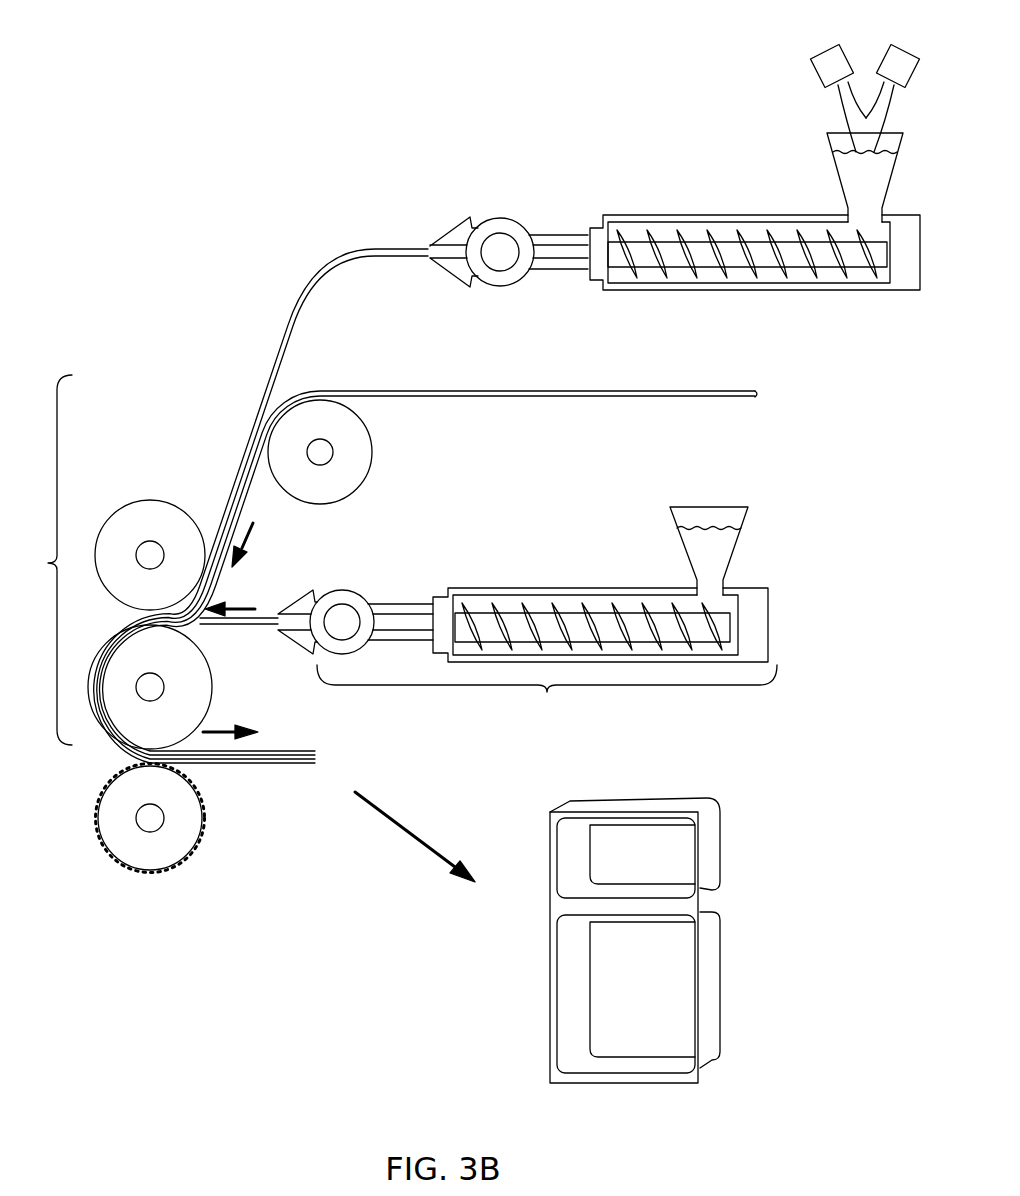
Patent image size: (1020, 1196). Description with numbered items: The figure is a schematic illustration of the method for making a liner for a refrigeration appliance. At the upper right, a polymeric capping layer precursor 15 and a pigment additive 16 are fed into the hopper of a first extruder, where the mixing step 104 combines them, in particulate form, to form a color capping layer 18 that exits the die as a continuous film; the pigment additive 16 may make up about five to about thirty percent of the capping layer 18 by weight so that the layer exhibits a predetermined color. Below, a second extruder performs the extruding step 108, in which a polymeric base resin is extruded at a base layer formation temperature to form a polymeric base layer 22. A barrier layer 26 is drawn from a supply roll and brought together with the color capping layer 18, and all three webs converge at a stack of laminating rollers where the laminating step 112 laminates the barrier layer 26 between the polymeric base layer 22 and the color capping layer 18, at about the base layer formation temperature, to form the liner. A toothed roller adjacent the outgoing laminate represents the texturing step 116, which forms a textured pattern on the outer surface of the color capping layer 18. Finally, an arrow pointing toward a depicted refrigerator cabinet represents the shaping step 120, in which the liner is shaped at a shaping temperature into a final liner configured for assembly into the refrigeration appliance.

The polymeric capping layer precursor 15 is at (815, 67).
The pigment additive 16 is at (892, 54).
The color capping layer 18 is at (850, 173).
The polymeric base layer 22 is at (262, 617).
The barrier layer 26 is at (446, 390).
The mixing step 104 is at (812, 139).
The extruding step 108 is at (527, 656).
The laminating step 112 is at (129, 562).
The texturing step 116 is at (216, 835).
The shaping step 120 is at (405, 825).